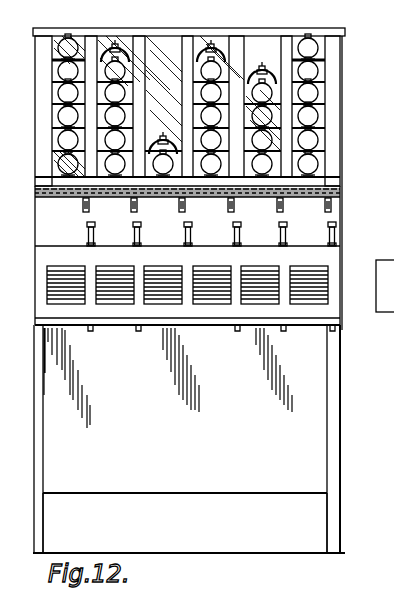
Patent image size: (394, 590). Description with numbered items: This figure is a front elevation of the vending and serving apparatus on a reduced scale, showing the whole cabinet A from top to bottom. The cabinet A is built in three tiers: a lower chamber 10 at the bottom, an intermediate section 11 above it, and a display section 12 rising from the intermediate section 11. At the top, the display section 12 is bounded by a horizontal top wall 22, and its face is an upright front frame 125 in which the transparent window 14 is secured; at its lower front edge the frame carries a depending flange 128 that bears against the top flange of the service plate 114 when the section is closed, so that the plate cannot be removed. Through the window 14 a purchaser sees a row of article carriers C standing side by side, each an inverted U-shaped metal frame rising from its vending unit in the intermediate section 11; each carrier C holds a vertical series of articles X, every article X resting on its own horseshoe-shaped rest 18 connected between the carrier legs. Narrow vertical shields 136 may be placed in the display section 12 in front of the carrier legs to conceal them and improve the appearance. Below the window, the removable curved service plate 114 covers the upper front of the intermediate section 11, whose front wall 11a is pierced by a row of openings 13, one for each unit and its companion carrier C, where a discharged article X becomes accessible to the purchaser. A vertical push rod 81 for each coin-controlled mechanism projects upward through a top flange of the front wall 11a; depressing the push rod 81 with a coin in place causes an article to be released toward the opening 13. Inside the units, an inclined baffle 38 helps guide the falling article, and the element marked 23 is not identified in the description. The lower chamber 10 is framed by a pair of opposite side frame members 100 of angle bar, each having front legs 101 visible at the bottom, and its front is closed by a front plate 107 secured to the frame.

The top wall 22 is at (142, 28).
The front window 14 is at (340, 41).
The upright front frame 125 is at (342, 61).
The shields 136 is at (190, 46).
The article carrier C is at (186, 62).
The articles X is at (117, 90).
The display section 12 is at (325, 144).
The rests 18 is at (320, 126).
The depending flange 128 is at (318, 187).
The service plate 114 is at (336, 212).
The intermediate section 11 is at (202, 255).
The front wall 11a is at (322, 234).
The push rod 81 is at (130, 233).
The knob 23 is at (178, 222).
The baffle 38 is at (105, 268).
The opening 13 is at (160, 305).
The cabinet A is at (203, 378).
The side frame members 100 is at (43, 443).
The front plate 107 is at (185, 474).
The front legs 101 is at (43, 513).
The lower chamber 10 is at (189, 530).